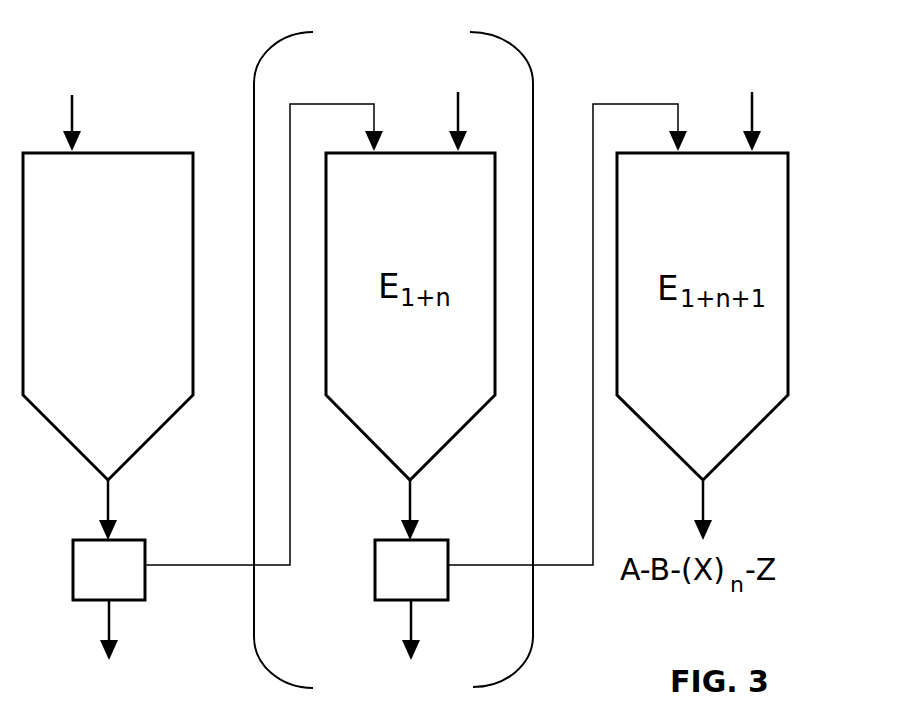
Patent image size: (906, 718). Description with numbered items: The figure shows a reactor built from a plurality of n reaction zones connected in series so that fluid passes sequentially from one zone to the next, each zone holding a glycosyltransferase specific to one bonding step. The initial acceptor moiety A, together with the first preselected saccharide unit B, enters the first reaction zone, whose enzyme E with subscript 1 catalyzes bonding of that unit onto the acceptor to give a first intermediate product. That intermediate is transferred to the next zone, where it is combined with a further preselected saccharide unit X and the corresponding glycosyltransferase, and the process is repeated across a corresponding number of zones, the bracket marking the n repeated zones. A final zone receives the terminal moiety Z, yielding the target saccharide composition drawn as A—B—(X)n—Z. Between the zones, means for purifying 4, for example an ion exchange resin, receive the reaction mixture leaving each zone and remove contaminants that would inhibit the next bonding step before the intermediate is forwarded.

The means for purifying 4 is at (122, 588).
The extraction stage E1 1 is at (108, 316).
The number of reaction zones n is at (404, 360).
The initial acceptor moiety A is at (77, 103).
The preselected saccharide unit X is at (464, 105).
The terminal moiety of the target saccharide composition Z is at (752, 102).